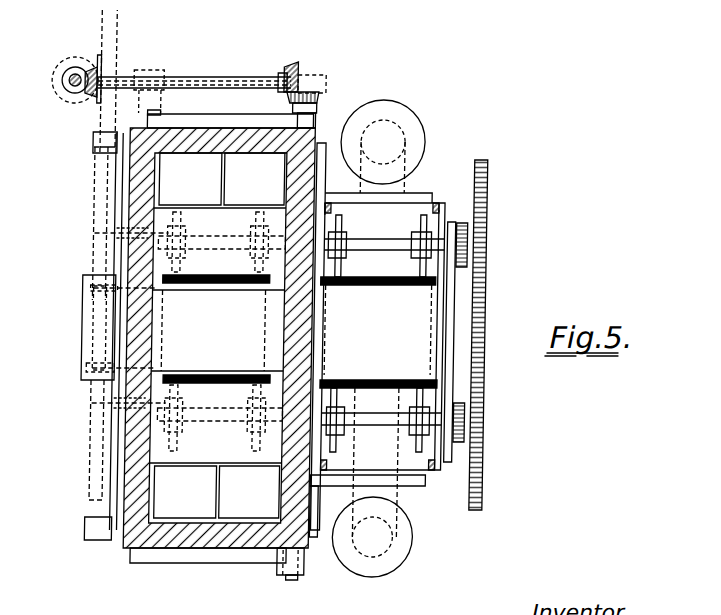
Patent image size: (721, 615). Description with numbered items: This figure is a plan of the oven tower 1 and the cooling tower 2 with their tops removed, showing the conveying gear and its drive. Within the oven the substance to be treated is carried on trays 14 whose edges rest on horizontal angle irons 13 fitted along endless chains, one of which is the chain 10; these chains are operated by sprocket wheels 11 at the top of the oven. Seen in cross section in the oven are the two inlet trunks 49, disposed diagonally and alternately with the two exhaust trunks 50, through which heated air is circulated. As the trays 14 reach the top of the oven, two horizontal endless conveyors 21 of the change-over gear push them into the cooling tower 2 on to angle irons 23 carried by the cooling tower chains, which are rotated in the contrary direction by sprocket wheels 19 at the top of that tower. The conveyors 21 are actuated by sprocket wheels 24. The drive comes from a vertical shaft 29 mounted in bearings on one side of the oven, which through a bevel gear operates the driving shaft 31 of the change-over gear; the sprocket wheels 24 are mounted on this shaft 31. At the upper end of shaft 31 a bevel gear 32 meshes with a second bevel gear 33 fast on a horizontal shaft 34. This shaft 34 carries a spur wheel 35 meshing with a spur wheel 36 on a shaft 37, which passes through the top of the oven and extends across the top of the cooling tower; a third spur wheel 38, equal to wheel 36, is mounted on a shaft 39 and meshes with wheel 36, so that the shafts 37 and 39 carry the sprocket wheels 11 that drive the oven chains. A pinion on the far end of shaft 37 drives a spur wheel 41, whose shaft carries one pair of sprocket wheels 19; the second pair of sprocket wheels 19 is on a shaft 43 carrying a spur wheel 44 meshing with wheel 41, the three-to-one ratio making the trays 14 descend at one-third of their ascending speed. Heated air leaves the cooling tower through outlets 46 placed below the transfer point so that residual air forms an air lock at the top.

The oven tower 1 is at (170, 550).
The cooling tower 2 is at (436, 471).
The endless chain 10 is at (305, 6).
The sprocket wheels 11 is at (96, 234).
The angle irons 13 is at (196, 279).
The trays 14 is at (118, 343).
The sprocket wheels 19 is at (420, 224).
The endless conveyors 21 is at (206, 371).
The angle irons 23 is at (362, 281).
The sprocket wheels 24 is at (97, 293).
The vertical shaft 29 is at (68, 82).
The driving shaft 31 is at (320, 172).
The bevel gear 32 is at (70, 92).
The bevel gear 33 is at (96, 62).
The horizontal shaft 34 is at (178, 77).
The spur wheel 35 is at (112, 32).
The spur wheel 36 is at (96, 206).
The shaft 37 is at (228, 246).
The spur wheel 38 is at (96, 444).
The shaft 39 is at (205, 418).
The spur wheel 41 is at (490, 289).
The shaft 43 is at (362, 421).
The spur wheel 44 is at (488, 420).
The outlets 46 is at (390, 0).
The inlet trunks 49 is at (252, 335).
The exhaust trunks 50 is at (188, 335).